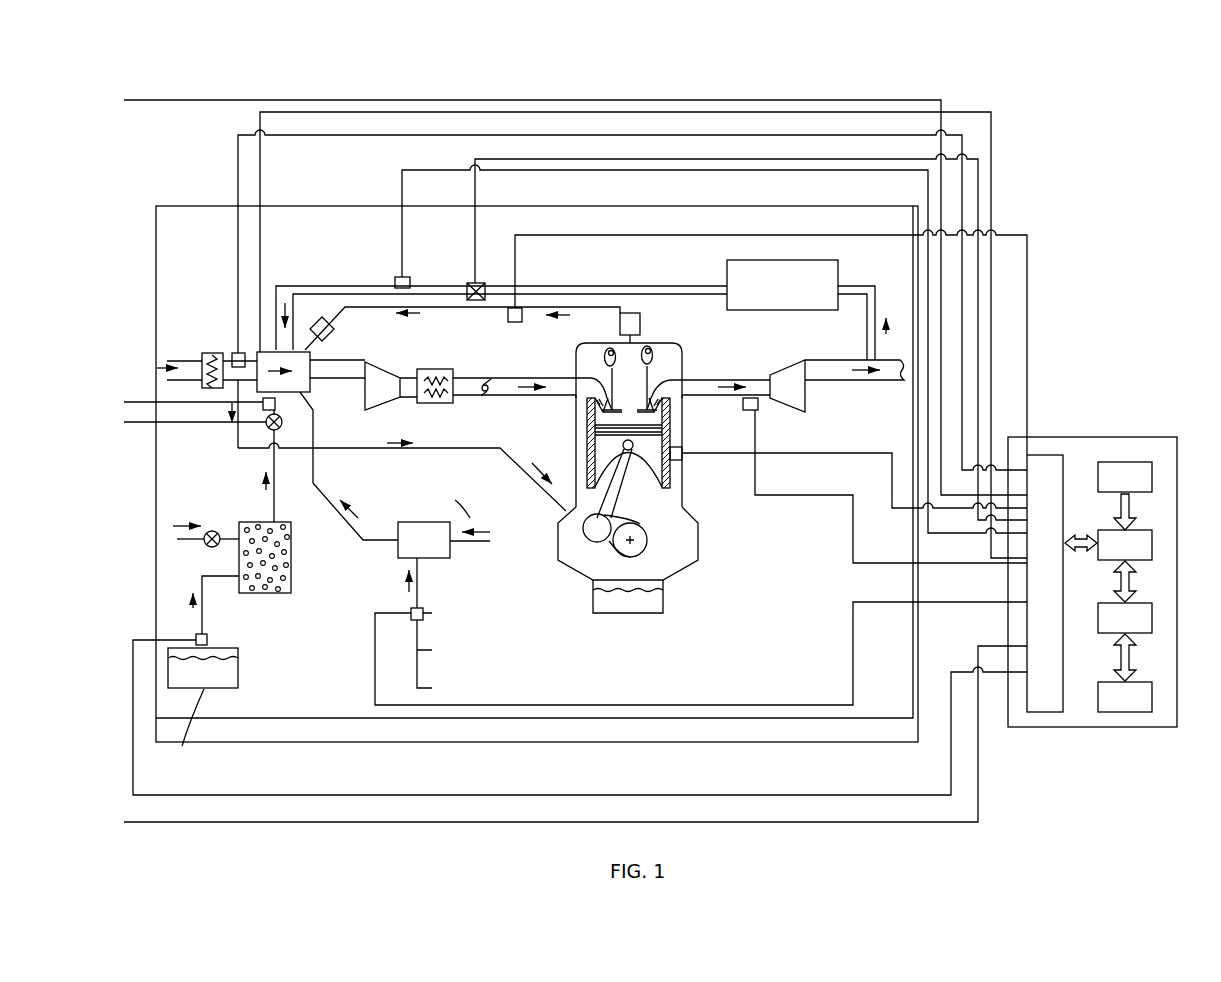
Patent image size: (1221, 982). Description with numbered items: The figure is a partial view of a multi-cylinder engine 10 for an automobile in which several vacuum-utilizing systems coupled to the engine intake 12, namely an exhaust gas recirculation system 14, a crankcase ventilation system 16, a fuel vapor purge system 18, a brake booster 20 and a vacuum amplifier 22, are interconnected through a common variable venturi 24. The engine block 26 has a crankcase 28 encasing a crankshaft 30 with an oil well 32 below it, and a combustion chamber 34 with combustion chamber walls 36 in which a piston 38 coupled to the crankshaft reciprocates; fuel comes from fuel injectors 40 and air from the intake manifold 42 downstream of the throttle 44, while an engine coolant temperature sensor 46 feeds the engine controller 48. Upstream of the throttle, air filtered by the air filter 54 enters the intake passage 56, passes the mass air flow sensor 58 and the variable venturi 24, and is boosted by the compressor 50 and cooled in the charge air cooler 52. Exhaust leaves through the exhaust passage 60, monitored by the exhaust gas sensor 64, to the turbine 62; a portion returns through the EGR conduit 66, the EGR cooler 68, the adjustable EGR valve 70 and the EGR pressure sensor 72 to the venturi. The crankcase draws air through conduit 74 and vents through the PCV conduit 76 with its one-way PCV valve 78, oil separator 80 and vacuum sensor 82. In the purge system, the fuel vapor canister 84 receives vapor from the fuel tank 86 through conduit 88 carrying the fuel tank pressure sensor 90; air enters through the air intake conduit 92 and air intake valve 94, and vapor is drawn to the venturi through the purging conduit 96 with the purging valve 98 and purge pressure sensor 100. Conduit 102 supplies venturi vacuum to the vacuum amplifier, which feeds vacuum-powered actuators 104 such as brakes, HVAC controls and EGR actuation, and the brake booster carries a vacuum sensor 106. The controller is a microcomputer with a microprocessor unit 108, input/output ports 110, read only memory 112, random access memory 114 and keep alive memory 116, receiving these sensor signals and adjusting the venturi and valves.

The multi-cylinder engine 10 is at (1084, 127).
The engine intake 12 is at (335, 381).
The exhaust gas recirculation (EGR) system 14 is at (576, 270).
The crankcase ventilation system 16 is at (574, 324).
The fuel vapor purge system 18 is at (216, 492).
The brake booster 20 is at (493, 597).
The vacuum amplifier 22 is at (455, 520).
The variable venturi 24 is at (262, 350).
The engine block 26 is at (698, 596).
The crankcase 28 is at (702, 551).
The crankshaft 30 is at (596, 538).
The oil well 32 is at (642, 604).
The combustion chamber 34 is at (634, 424).
The combustion chamber walls 36 is at (668, 430).
The piston 38 is at (600, 445).
The fuel injectors 40 is at (652, 356).
The intake manifold 42 is at (532, 377).
The throttle 44 is at (487, 392).
The engine coolant temperature (ECT) sensor 46 is at (676, 456).
The engine controller 48 is at (1126, 437).
The compressor 50 is at (394, 402).
The charge air cooler 52 is at (425, 369).
The air filter 54 is at (204, 352).
The intake passage 56 is at (156, 366).
The mass air flow (MAF) sensor 58 is at (237, 352).
The exhaust passage 60 is at (718, 378).
The turbine 62 is at (837, 386).
The exhaust gas sensor 64 is at (760, 408).
The exhaust gas recirculation conduit 66 is at (663, 285).
The EGR cooler 68 is at (785, 260).
The adjustable exhaust gas recirculation valve 70 is at (470, 283).
The EGR pressure sensor 72 is at (406, 277).
The conduit 74 is at (432, 451).
The PCV conduit 76 is at (436, 320).
The PCV valve 78 is at (314, 322).
The oil separator 80 is at (641, 324).
The vacuum sensor 82 is at (505, 322).
The fuel vapor canister 84 is at (268, 593).
The fuel tank 86 is at (190, 711).
The conduit 88 is at (203, 596).
The fuel tank pressure sensor 90 is at (197, 633).
The air intake conduit 92 is at (184, 541).
The air intake valve 94 is at (207, 531).
The fuel vapor purging conduit 96 is at (274, 508).
The fuel vapor purging valve 98 is at (281, 428).
The fuel vapor purge pressure sensor 100 is at (266, 418).
The conduit 102 is at (317, 488).
The vacuum-powered actuators 104 is at (571, 651).
The vacuum sensor 106 is at (411, 612).
The microprocessor unit 108 is at (1152, 547).
The input/output ports 110 is at (1045, 466).
The read only memory chip 112 is at (1152, 477).
The random access memory 114 is at (1152, 620).
The keep alive memory 116 is at (1152, 697).